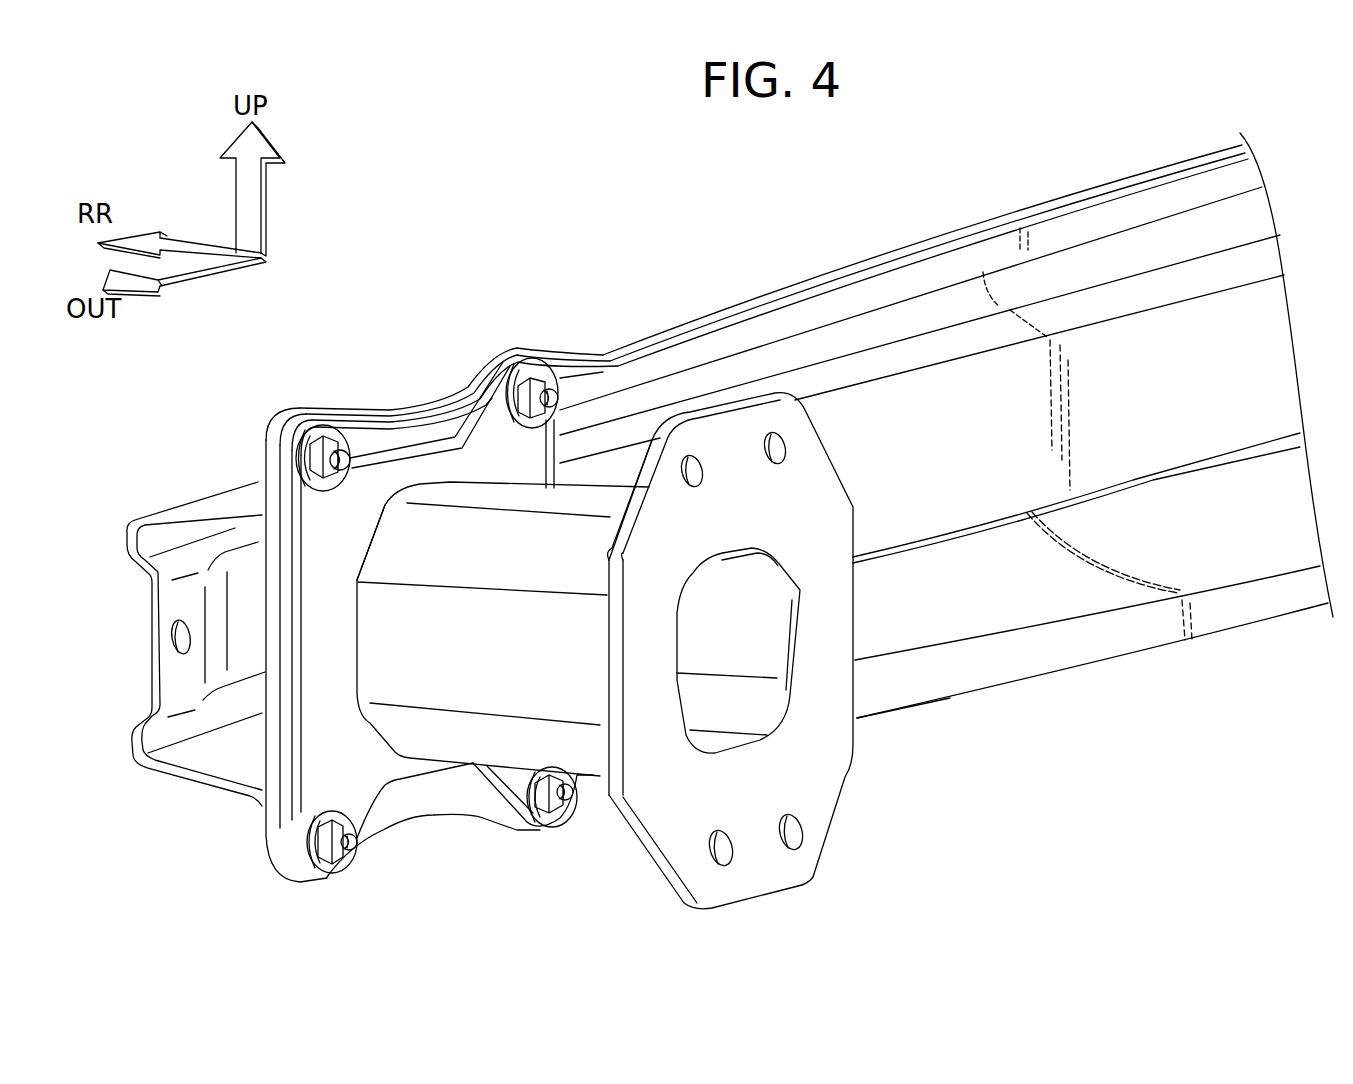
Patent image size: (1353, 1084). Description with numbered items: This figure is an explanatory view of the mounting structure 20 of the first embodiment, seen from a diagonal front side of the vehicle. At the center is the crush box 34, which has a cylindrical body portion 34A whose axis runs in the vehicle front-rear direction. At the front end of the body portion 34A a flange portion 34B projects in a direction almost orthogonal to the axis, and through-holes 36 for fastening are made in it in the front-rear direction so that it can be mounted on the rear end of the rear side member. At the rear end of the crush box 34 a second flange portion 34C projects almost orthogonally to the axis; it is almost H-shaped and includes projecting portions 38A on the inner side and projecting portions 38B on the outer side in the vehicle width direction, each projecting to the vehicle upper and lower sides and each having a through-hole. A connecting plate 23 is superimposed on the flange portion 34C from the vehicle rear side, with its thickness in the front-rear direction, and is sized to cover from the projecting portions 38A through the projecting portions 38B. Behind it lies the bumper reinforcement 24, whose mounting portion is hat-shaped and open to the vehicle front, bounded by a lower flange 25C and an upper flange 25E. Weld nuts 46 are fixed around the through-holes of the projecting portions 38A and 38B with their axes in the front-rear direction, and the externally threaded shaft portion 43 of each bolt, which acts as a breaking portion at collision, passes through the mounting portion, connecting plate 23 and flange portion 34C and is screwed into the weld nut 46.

The mounting structure 20 is at (432, 312).
The connecting plate 23 is at (412, 435).
The bumper reinforcement 24 is at (780, 285).
The lower flange 25C is at (903, 695).
The upper flange 25E is at (593, 380).
The crush box 34 is at (447, 737).
The body portion 34A is at (592, 682).
The flange portion 34B is at (817, 787).
The flange portion 34C is at (357, 493).
The through-holes 36 is at (700, 480).
The projecting portions 38A is at (490, 392).
The projecting portions 38B is at (352, 456).
The shaft portion 43 is at (558, 394).
The weld nuts 46 is at (530, 358).